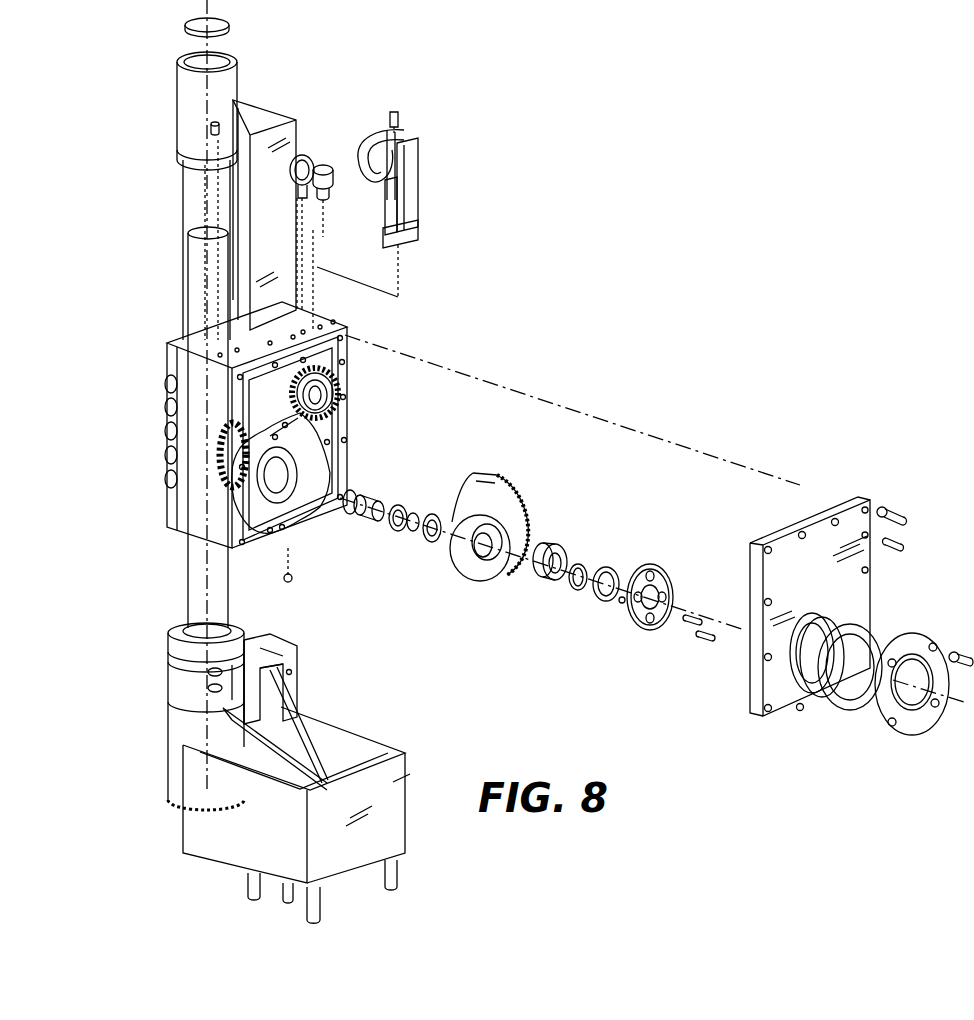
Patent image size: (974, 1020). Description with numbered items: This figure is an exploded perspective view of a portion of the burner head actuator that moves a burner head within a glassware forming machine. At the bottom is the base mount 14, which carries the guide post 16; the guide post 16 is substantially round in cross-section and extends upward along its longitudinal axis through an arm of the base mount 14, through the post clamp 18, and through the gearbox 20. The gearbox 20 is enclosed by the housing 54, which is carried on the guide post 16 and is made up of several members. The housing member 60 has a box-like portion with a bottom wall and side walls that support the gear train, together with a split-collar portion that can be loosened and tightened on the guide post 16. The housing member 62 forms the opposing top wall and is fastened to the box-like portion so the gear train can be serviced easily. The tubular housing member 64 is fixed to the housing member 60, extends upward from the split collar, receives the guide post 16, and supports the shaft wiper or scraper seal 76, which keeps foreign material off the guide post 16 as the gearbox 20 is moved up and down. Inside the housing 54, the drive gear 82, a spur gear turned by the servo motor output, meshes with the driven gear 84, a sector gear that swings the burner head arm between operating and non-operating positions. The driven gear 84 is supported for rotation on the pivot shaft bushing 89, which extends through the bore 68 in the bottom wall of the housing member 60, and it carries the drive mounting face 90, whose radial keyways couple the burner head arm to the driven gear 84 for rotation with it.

The base mount 14 is at (388, 847).
The guide post 16 is at (195, 268).
The post clamp 18 is at (188, 680).
The gearbox 20 is at (235, 442).
The housing 54 is at (190, 445).
The housing member 60 is at (335, 330).
The housing member 62 is at (853, 577).
The housing member 64 is at (183, 97).
The bore 68 is at (273, 467).
The shaft wiper or scraper seal 76 is at (233, 27).
The drive gear 82 is at (340, 384).
The driven gear 84 is at (503, 482).
The pivot shaft bushing 89 is at (385, 524).
The drive mounting face 90 is at (632, 623).